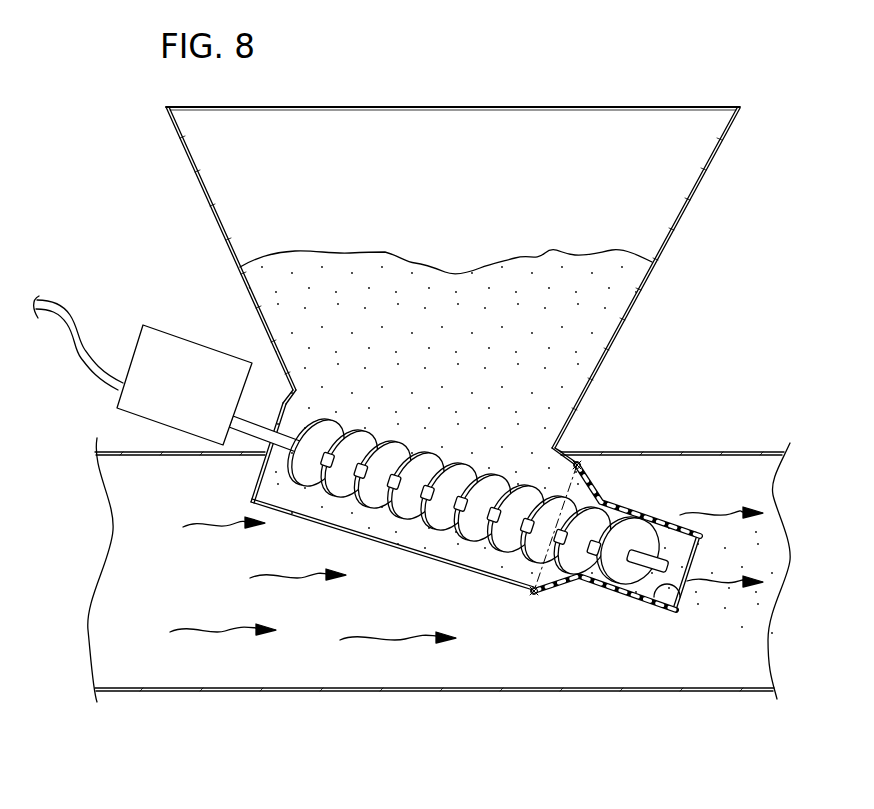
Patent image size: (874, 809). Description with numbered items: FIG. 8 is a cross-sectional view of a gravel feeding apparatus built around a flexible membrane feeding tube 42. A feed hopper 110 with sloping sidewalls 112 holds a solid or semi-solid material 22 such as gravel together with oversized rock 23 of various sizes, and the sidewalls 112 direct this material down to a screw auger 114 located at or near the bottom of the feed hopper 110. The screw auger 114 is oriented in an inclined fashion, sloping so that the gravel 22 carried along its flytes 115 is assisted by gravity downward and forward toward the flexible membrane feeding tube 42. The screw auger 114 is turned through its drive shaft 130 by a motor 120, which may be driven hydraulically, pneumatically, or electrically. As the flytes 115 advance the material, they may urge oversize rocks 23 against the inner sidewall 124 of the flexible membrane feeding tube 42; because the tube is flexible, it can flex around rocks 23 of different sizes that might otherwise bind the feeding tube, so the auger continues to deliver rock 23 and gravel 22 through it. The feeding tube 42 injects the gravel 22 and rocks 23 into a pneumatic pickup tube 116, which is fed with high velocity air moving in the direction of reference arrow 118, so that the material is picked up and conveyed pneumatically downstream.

The feed hopper 110 is at (742, 111).
The sloping sidewalls 112 is at (197, 163).
The solid or semi-solid material 22 is at (307, 250).
The oversized rock 23 is at (417, 317).
The flexible membrane feeding tube 42 is at (600, 497).
The screw auger 114 is at (643, 567).
The flytes 115 is at (668, 537).
The pneumatic pickup tube 116 is at (350, 690).
The reference arrow 118 is at (720, 515).
The motor 120 is at (115, 404).
The inner sidewall 124 is at (672, 597).
The drive shaft 130 is at (253, 427).